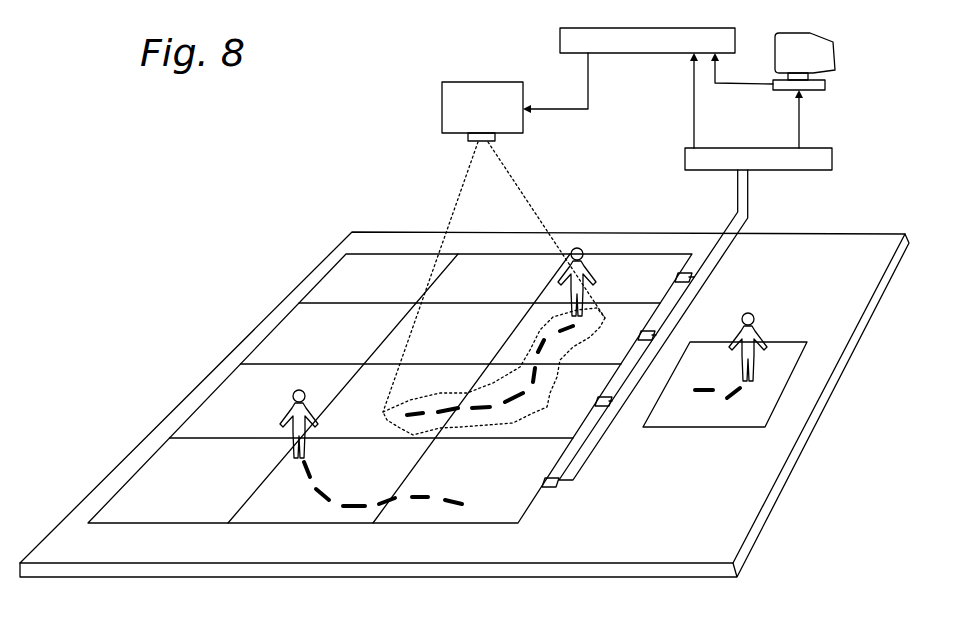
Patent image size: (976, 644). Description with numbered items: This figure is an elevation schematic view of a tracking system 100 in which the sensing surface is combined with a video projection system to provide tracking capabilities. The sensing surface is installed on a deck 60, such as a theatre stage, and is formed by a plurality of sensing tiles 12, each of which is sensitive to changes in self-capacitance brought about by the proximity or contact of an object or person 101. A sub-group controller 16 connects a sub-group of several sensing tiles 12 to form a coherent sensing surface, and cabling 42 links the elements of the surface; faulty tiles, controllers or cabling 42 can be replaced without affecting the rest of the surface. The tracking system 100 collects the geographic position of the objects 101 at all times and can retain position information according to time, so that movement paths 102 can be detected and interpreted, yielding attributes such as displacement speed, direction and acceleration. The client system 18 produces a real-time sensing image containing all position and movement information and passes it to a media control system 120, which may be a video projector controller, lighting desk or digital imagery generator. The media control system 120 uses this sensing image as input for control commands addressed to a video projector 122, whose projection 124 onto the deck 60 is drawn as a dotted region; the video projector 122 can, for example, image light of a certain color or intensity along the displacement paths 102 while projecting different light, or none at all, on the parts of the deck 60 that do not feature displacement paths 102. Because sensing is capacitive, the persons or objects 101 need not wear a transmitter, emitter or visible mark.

The sensing tile 12 is at (381, 284).
The sub-group controller 16 is at (831, 161).
The client system 18 is at (808, 59).
The cabling 42 is at (748, 192).
The deck 60 is at (321, 262).
The tracking system 100 is at (331, 171).
The object 101 is at (289, 409).
The movement path 102 is at (422, 498).
The media control system 120 is at (560, 43).
The video projector 122 is at (442, 93).
The projection 124 is at (448, 220).